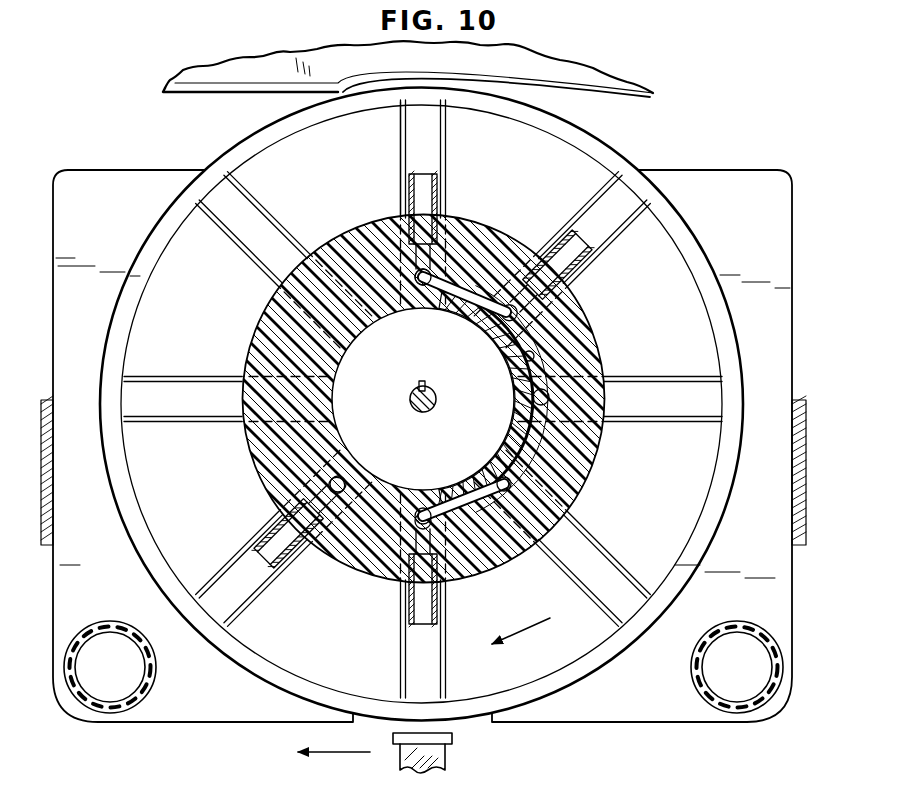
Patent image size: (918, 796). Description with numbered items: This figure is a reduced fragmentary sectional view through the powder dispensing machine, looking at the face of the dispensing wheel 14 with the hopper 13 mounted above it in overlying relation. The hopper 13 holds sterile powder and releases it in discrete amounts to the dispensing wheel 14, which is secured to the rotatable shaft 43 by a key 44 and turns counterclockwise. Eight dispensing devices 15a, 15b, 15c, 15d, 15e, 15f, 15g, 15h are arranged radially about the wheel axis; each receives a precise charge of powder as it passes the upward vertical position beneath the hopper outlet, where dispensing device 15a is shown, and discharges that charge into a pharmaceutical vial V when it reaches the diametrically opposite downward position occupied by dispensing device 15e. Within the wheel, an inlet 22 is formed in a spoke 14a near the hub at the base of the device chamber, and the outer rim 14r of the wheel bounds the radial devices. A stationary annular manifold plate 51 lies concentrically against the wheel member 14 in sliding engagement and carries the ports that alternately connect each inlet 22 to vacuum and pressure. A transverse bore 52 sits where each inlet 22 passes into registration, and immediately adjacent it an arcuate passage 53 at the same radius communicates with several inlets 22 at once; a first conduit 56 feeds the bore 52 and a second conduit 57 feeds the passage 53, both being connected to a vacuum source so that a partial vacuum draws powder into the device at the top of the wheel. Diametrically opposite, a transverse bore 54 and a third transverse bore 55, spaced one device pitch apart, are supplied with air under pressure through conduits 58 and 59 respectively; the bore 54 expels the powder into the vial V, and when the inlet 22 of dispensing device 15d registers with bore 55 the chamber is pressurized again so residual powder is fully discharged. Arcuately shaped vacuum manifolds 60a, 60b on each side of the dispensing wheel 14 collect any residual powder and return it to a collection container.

The hopper 13 is at (597, 77).
The dispensing wheel 14 is at (640, 153).
The inner ring wall 14r is at (642, 172).
The spoke 14a is at (396, 151).
The dispensing device 15a is at (447, 151).
The dispensing device 15b is at (264, 226).
The dispensing device 15c is at (165, 396).
The dispensing device 15d is at (228, 592).
The dispensing device 15e is at (416, 656).
The dispensing device 15f is at (598, 582).
The dispensing device 15g is at (664, 408).
The dispensing device 15h is at (623, 215).
The inlet 22 is at (372, 320).
The rotatable shaft 43 is at (424, 412).
The key 44 is at (425, 385).
The manifold plate 51 is at (491, 236).
The transverse bore 52 is at (422, 286).
The arcuate passage 53 is at (524, 358).
The transverse bore 54 is at (423, 508).
The third transverse bore 55 is at (346, 480).
The first conduit 56 is at (439, 190).
The second conduit 57 is at (588, 258).
The conduit 58 is at (440, 614).
The conduit 59 is at (290, 565).
The vacuum manifold 60a is at (667, 705).
The vacuum manifold 60b is at (172, 707).
The pharmaceutical vial V is at (452, 753).